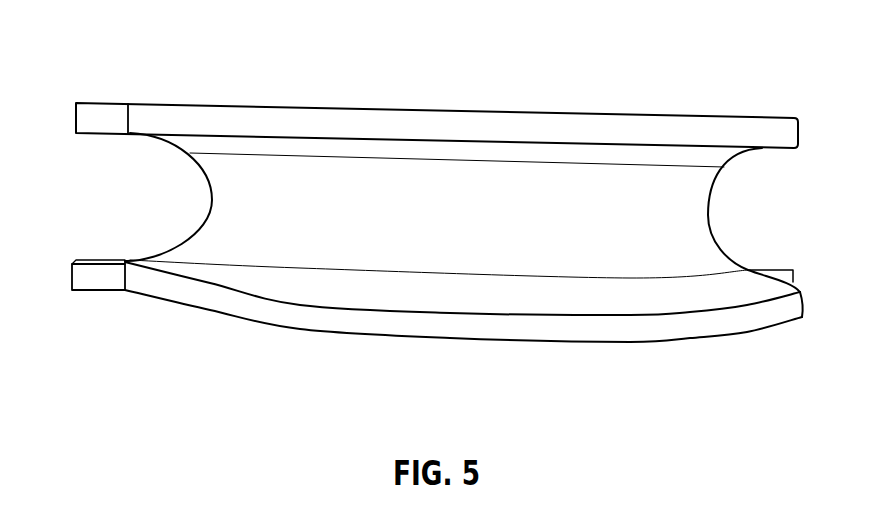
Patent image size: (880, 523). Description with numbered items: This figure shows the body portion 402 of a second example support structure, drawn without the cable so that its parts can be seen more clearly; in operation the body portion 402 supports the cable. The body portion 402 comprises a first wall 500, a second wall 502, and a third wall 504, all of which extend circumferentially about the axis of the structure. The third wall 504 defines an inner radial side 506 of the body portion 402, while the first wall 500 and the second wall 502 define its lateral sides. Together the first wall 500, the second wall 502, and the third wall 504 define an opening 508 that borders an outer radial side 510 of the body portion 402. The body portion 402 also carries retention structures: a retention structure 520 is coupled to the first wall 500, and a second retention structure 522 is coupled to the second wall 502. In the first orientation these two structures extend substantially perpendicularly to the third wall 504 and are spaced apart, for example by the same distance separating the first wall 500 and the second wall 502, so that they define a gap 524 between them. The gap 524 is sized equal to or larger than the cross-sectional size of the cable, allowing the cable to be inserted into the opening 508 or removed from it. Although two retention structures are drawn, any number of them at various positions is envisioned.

The body portion 402 is at (440, 103).
The first wall 500 is at (175, 123).
The second wall 502 is at (147, 293).
The third wall 504 is at (210, 204).
The inner radial side 506 is at (243, 209).
The opening 508 is at (112, 214).
The outer radial side 510 is at (778, 198).
The retention structure 520 is at (100, 118).
The second retention structure 522 is at (88, 282).
The gap 524 is at (98, 173).